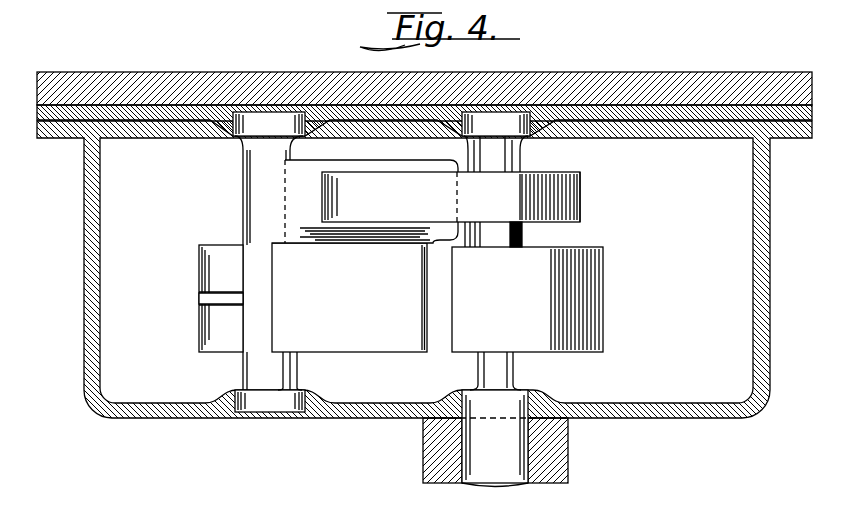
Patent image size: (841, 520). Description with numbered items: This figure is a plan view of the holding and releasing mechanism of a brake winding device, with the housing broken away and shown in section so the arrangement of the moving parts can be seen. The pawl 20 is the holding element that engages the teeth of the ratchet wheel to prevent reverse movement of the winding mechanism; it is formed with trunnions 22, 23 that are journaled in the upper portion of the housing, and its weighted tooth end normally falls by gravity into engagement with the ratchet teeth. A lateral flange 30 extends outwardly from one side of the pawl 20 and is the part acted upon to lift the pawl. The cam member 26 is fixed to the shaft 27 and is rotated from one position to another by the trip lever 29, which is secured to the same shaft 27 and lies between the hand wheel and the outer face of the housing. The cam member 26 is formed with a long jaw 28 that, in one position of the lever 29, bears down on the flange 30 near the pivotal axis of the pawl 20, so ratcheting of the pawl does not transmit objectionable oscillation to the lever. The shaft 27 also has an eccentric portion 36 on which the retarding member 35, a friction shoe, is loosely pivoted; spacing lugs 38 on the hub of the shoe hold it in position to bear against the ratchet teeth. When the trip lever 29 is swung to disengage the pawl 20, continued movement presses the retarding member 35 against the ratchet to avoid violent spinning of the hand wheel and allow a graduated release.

The pawl 20 is at (403, 348).
The trunnion 22 is at (260, 402).
The trunnion 23 is at (252, 162).
The cam member 26 is at (585, 177).
The shaft 27 is at (528, 115).
The long jaw 28 is at (347, 183).
The trip lever 29 is at (423, 481).
The flange 30 is at (392, 236).
The retarding member 35 is at (605, 292).
The eccentric portion 36 is at (572, 248).
The spacing lugs 38 is at (497, 240).